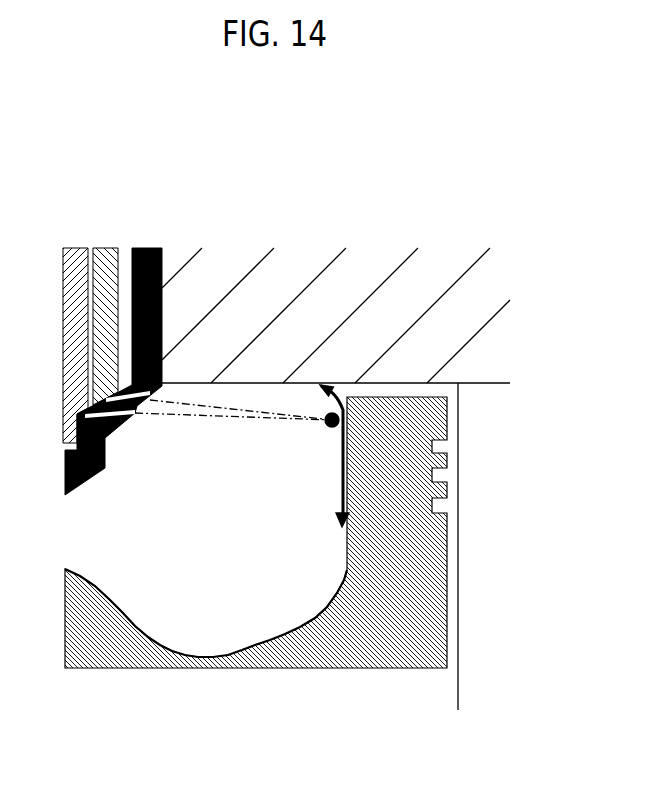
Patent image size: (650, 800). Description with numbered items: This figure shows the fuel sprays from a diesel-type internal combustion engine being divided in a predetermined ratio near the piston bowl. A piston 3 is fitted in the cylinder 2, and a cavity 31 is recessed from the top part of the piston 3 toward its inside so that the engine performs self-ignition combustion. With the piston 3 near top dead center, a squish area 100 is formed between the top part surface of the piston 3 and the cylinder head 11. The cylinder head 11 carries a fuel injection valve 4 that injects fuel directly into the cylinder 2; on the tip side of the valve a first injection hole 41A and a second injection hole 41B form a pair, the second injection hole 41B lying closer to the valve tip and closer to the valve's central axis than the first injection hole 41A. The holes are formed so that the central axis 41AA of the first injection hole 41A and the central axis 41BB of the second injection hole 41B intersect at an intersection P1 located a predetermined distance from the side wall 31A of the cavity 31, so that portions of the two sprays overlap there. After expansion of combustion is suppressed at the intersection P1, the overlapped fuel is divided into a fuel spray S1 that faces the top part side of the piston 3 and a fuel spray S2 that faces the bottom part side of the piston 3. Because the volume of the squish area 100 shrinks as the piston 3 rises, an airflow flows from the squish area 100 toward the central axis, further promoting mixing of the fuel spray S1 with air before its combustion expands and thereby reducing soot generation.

The fuel injection valve 4 is at (79, 221).
The first injection hole 41A is at (157, 402).
The second injection hole 41B is at (132, 422).
The central axis of the first injection hole 41AA is at (186, 400).
The central axis of the second injection hole 41BB is at (220, 419).
The cylinder head 11 is at (490, 302).
The squish area 100 is at (403, 390).
The cylinder 2 is at (448, 577).
The piston 3 is at (256, 566).
The cavity 31 is at (222, 605).
The side wall of the cavity 31A is at (340, 533).
The fuel spray facing the top part side of the piston S1 is at (327, 395).
The fuel spray facing the bottom part side of the piston S2 is at (338, 478).
The intersection P1 is at (327, 428).